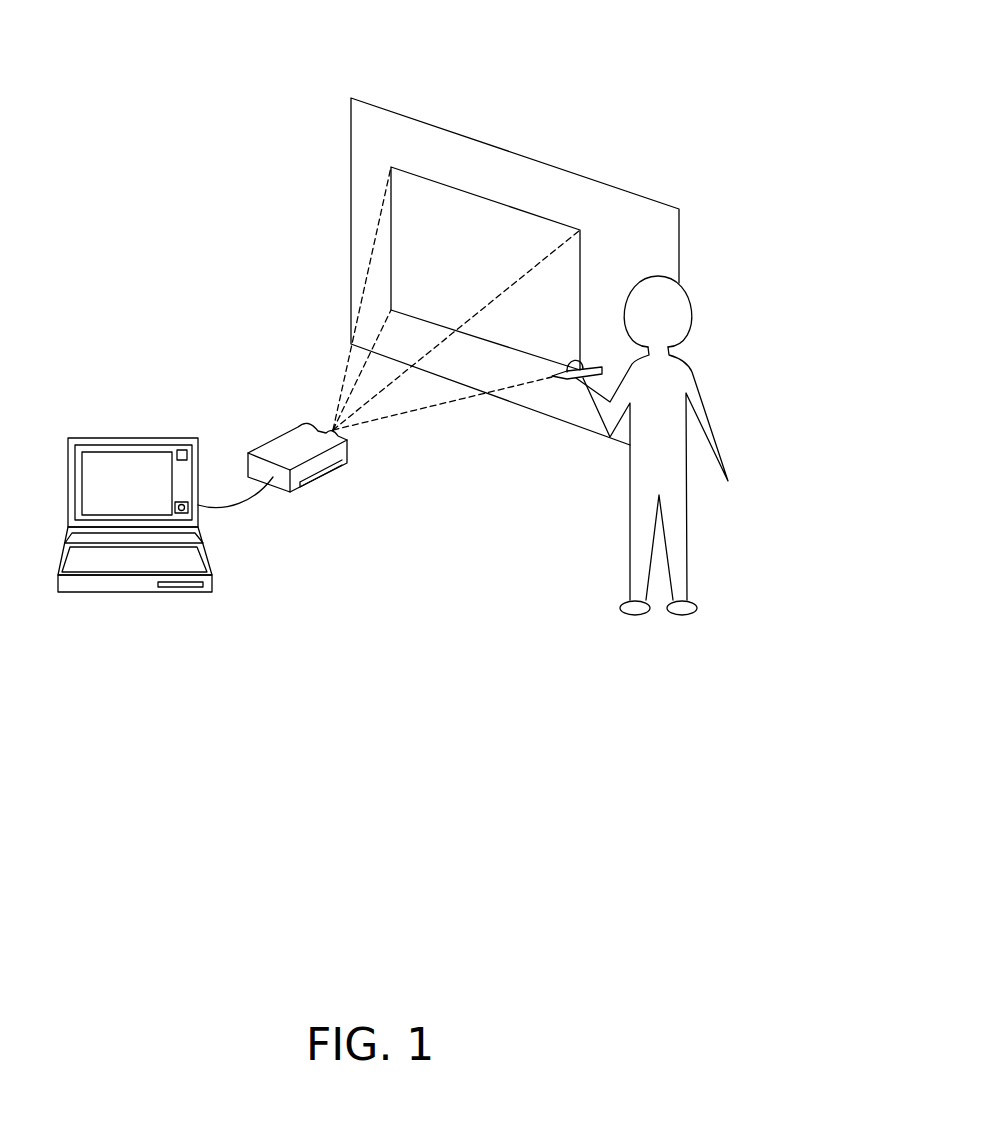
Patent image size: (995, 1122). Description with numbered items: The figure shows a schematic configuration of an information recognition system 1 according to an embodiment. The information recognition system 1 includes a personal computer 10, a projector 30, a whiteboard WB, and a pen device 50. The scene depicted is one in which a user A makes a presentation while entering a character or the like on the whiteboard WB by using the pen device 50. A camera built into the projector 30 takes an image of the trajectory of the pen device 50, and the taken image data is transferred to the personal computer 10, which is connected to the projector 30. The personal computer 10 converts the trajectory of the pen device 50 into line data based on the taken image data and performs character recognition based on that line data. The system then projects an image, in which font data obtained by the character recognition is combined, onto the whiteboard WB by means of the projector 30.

The information recognition system 1 is at (549, 89).
The personal computer 10 is at (135, 438).
The projector 30 is at (302, 435).
The pen device 50 is at (598, 362).
The user A is at (630, 492).
The whiteboard WB is at (350, 142).